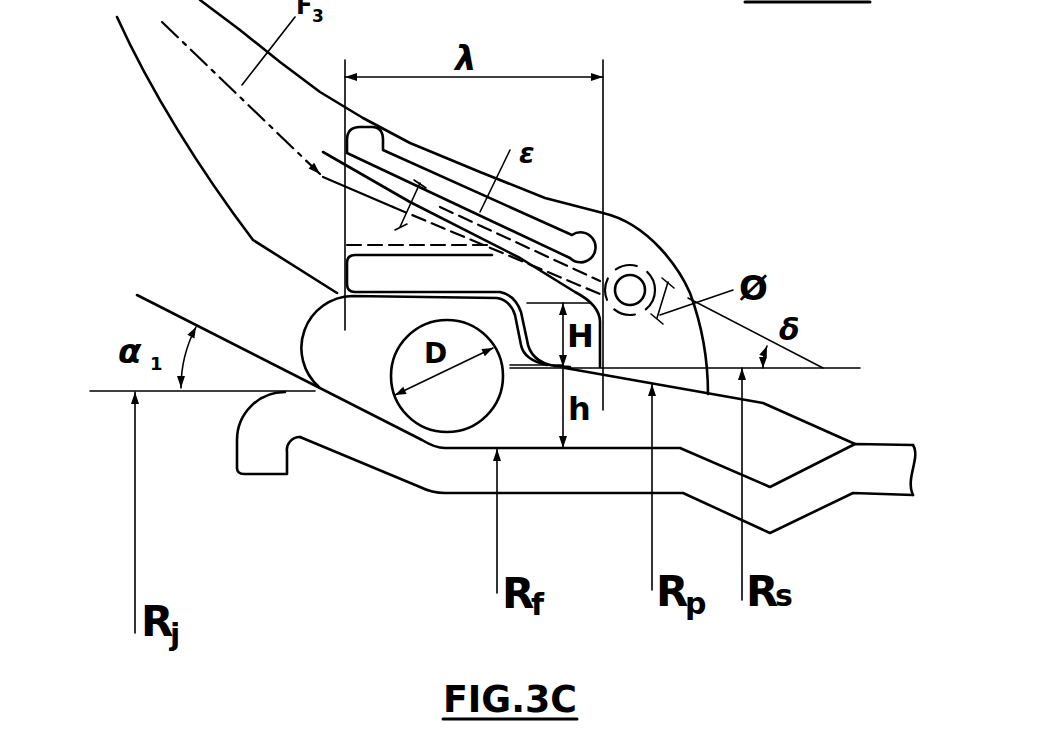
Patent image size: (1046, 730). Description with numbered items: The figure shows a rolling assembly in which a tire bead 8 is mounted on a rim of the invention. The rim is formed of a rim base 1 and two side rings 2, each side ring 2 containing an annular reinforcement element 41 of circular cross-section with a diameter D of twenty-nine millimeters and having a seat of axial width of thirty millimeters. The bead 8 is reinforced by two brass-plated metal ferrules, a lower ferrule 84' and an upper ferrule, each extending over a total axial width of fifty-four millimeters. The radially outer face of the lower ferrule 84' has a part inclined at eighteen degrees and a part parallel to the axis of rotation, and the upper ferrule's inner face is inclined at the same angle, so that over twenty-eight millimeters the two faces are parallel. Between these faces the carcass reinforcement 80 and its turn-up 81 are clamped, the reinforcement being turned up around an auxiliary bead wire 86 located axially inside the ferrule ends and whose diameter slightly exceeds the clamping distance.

The rim base 1 is at (570, 477).
The side ring 2 is at (358, 378).
The bead 8 is at (192, 113).
The carcass reinforcement 80 is at (262, 135).
The turn-up 81 is at (370, 246).
The lower ferrule 84' is at (390, 311).
The auxiliary bead wire 86 is at (632, 288).
The annular reinforcement element 41 is at (447, 407).